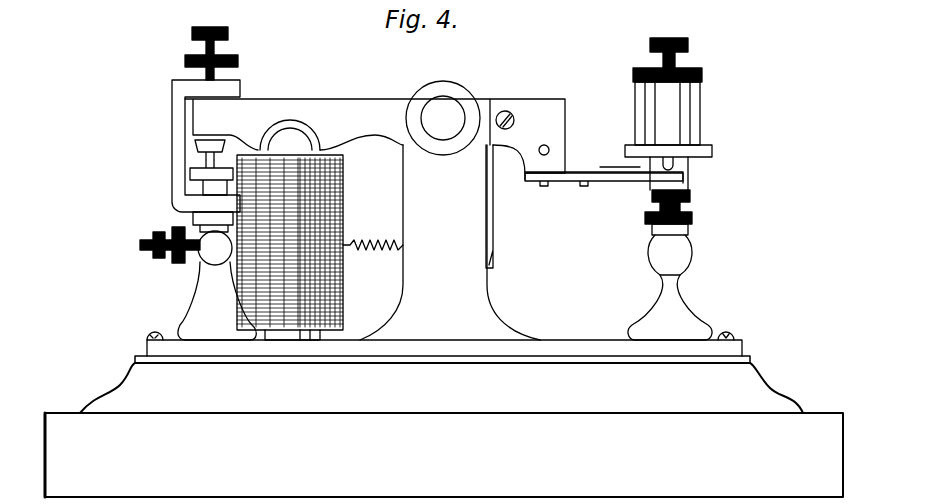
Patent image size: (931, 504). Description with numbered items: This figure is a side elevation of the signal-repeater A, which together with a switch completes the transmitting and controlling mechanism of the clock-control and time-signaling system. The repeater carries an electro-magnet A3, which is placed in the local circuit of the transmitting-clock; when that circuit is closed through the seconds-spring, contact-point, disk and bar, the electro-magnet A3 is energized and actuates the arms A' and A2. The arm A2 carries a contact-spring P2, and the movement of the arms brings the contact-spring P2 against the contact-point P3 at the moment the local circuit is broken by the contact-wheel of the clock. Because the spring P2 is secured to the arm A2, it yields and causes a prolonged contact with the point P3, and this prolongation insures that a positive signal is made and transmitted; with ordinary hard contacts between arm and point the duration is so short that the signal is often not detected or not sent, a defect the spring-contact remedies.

The repeater A is at (450, 210).
The arm A' is at (375, 139).
The arm A2 is at (604, 189).
The electro-magnet A3 is at (320, 247).
The contact-spring P2 is at (604, 168).
The contact-point P3 is at (679, 199).